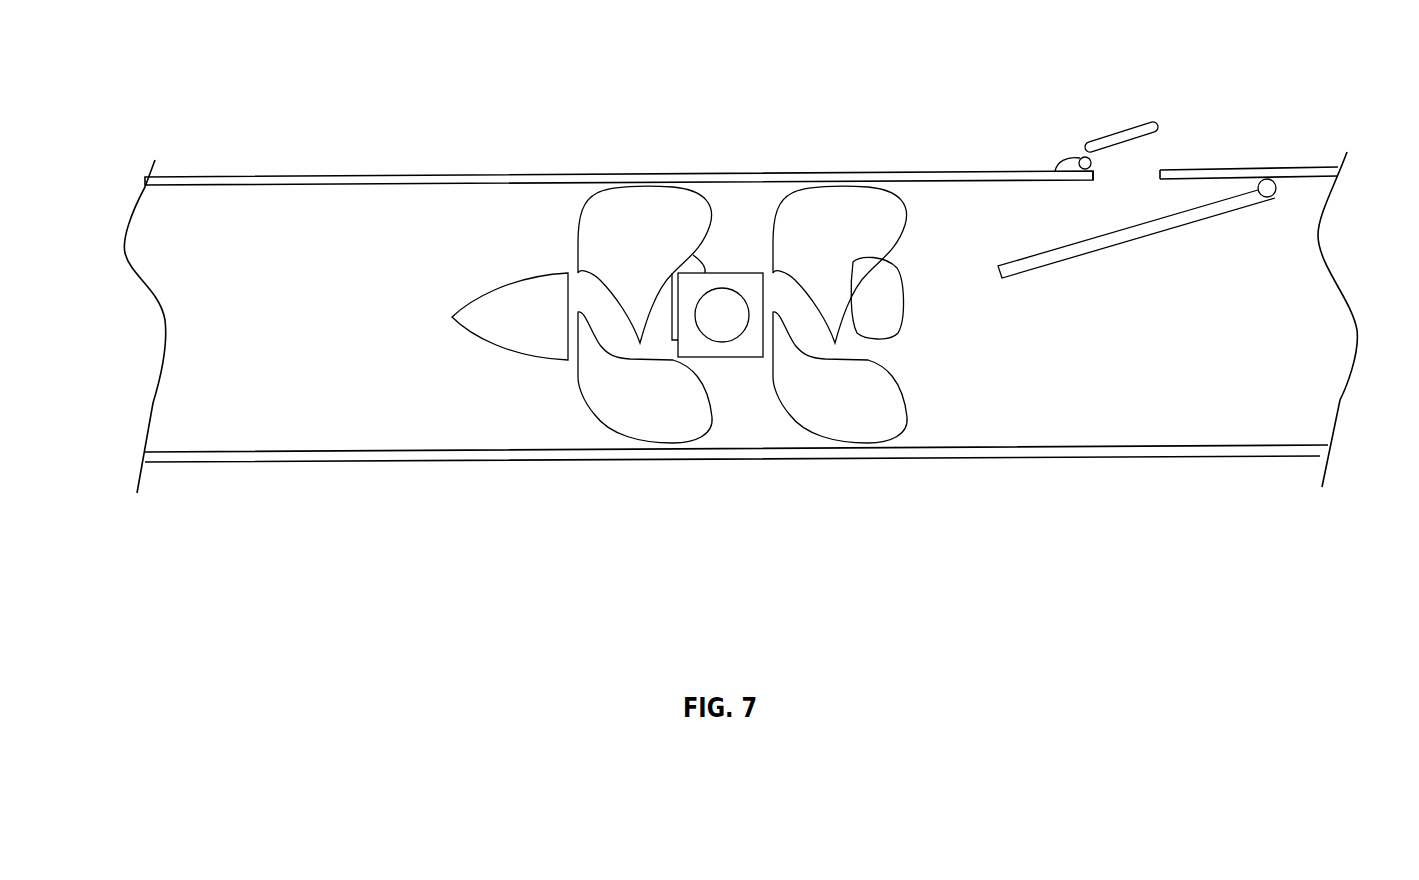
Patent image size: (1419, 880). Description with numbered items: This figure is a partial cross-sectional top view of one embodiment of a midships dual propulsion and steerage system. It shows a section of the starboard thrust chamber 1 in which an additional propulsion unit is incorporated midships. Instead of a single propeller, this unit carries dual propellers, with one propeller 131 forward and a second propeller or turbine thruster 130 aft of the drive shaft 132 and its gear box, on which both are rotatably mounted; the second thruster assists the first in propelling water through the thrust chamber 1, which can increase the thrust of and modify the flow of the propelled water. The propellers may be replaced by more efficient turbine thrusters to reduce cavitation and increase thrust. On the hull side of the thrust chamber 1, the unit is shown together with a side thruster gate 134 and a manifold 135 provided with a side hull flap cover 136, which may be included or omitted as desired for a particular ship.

The thrust chamber 1 is at (400, 217).
The propeller or turbine thruster 130 is at (802, 314).
The propeller 131 is at (602, 314).
The drive shaft and gear unit 132 is at (718, 313).
The side thruster gate 134 is at (1177, 227).
The manifold 135 is at (1151, 167).
The side hull flap cover 136 is at (1149, 119).